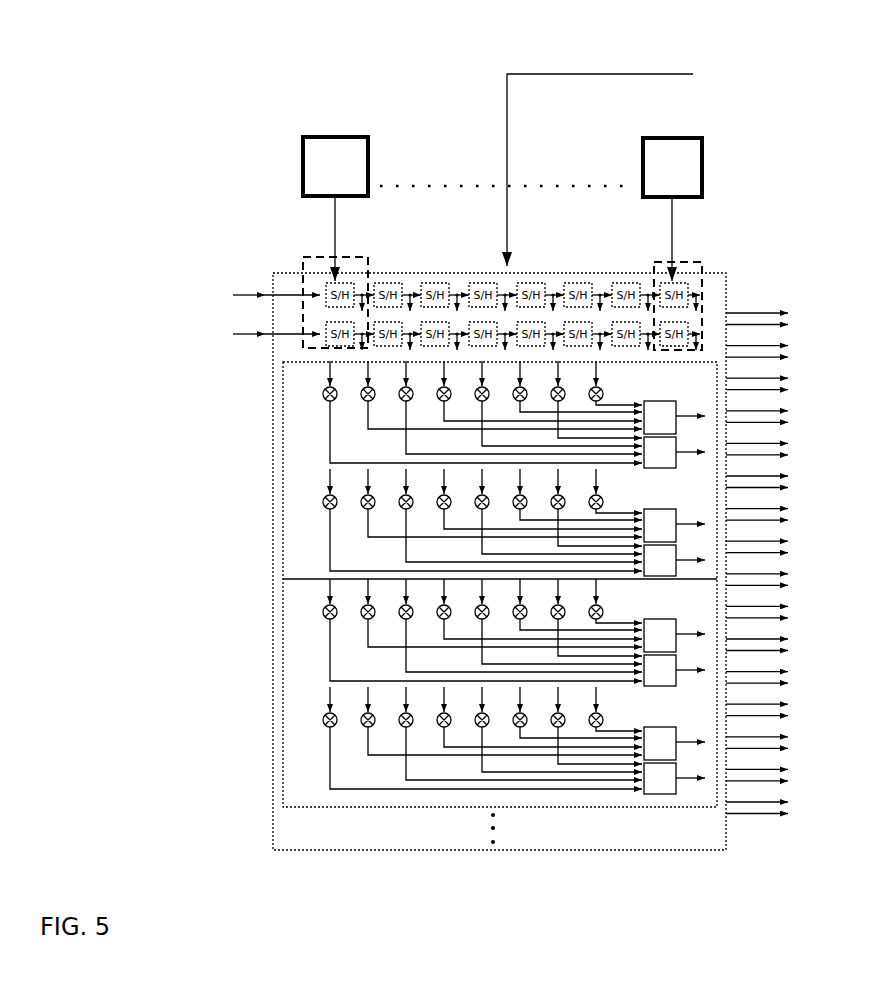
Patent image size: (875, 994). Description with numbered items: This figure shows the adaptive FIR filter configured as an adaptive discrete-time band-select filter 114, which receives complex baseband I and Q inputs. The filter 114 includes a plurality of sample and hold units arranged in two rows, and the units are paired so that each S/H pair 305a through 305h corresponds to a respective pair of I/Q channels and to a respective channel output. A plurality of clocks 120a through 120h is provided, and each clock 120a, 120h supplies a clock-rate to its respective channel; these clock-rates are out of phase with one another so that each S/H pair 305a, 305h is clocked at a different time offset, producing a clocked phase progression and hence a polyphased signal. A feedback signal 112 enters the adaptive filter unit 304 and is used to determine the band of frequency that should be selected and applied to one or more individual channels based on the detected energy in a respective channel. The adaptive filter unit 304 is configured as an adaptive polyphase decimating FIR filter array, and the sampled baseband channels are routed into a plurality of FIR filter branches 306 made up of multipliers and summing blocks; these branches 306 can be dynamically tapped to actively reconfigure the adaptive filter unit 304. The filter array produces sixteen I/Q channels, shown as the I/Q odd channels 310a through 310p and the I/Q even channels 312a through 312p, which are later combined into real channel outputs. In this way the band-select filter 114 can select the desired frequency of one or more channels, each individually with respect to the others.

The feedback signal 112 is at (613, 80).
The adaptive discrete-time band-select filter 114 is at (246, 271).
The clock 120a is at (300, 166).
The clock 120h is at (640, 165).
The adaptive filter unit 304 is at (444, 273).
The S/H pair 305a is at (301, 260).
The S/H pair 305h is at (652, 266).
The FIR filter branches 306 is at (322, 446).
The I/Q odd channel 310a is at (752, 310).
The I/Q even channel 312a is at (757, 340).
The I/Q odd channel 310p is at (757, 790).
The I/Q even channel 312p is at (772, 818).